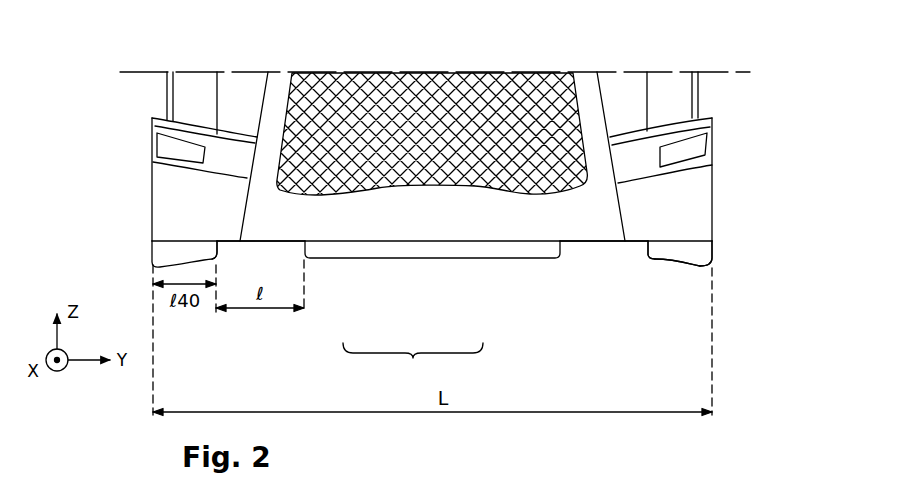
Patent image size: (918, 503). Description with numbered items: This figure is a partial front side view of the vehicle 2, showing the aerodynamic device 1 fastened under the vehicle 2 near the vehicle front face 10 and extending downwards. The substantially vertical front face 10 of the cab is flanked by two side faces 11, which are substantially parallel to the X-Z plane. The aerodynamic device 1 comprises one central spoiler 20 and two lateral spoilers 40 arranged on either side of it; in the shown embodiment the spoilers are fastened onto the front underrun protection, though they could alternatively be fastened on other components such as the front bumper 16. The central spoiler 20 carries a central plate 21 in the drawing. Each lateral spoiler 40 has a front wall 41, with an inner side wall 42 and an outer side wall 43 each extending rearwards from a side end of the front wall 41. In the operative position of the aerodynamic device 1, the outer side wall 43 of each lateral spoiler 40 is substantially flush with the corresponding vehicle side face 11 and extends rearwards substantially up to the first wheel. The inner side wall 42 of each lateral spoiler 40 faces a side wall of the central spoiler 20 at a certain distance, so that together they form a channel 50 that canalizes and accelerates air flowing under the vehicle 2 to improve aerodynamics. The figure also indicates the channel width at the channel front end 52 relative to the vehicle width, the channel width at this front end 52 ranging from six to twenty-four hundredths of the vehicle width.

The aerodynamic device 1 is at (413, 364).
The vehicle 2 is at (723, 92).
The front face 10 is at (275, 92).
The side face 11 is at (152, 135).
The front bumper 16 is at (283, 212).
The central spoiler 20 is at (403, 273).
The central plate 21 is at (447, 248).
The lateral spoiler 40 is at (207, 312).
The front wall 41 is at (667, 248).
The inner side wall 42 is at (648, 247).
The outer side wall 43 is at (715, 252).
The channel 50 is at (273, 256).
The channel front end 52 is at (233, 250).